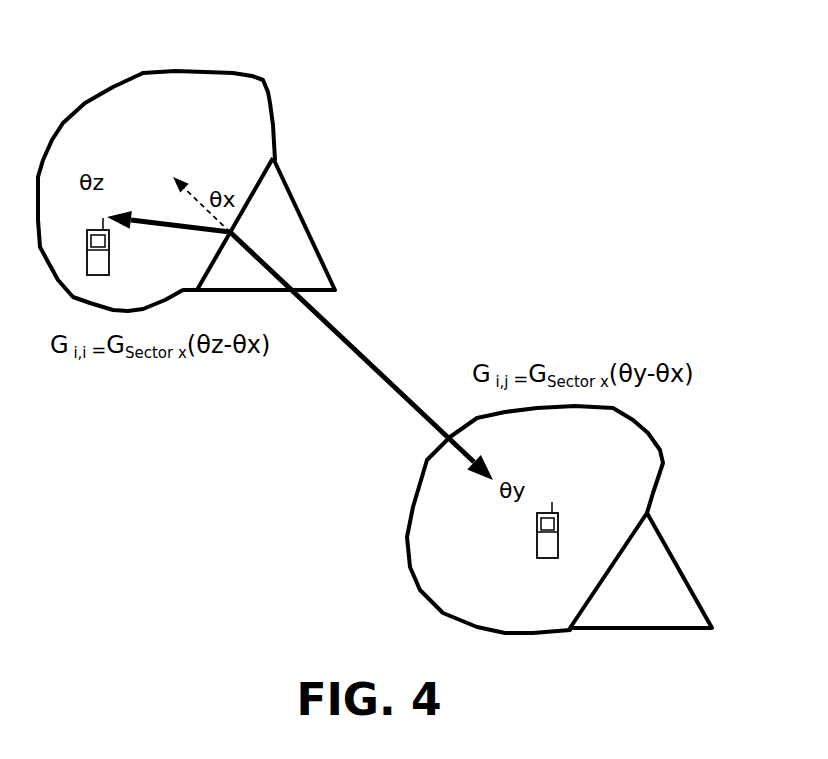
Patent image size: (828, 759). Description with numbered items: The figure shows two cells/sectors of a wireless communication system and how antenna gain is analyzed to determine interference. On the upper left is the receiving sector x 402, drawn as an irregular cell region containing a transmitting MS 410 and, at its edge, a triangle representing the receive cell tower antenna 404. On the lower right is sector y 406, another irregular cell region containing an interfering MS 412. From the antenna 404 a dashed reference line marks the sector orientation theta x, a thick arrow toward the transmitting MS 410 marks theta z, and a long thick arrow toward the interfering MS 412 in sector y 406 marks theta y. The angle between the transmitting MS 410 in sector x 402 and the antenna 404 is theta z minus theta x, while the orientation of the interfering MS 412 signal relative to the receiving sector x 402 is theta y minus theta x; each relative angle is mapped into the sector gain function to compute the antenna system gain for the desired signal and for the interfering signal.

The sector x 402 is at (144, 156).
The receive cell tower antenna 404 is at (292, 213).
The sector y 406 is at (554, 485).
The transmitting MS 410 is at (85, 257).
The interfering MS 412 is at (537, 540).